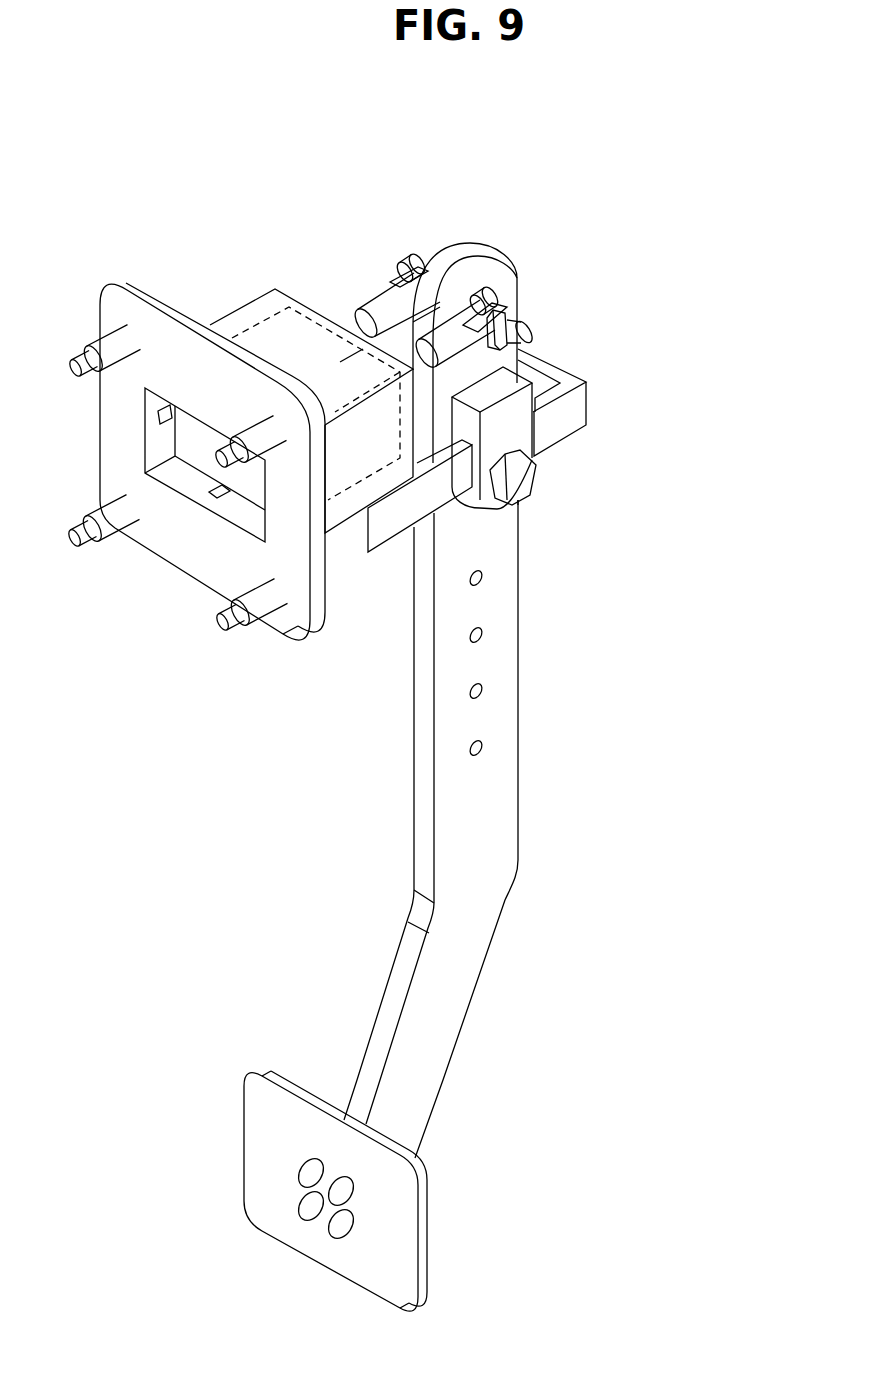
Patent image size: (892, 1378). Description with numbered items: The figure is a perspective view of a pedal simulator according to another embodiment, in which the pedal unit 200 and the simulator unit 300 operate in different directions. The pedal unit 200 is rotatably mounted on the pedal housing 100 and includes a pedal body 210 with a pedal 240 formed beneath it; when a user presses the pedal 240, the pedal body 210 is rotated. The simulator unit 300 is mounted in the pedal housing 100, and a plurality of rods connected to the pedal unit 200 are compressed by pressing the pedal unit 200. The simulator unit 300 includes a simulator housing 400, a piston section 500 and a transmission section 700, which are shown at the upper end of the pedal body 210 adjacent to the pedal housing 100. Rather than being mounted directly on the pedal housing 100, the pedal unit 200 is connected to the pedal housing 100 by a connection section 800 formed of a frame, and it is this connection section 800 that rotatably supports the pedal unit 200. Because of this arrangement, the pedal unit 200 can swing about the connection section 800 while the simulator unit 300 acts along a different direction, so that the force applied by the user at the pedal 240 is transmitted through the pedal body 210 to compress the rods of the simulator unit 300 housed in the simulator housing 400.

The pedal housing 100 is at (207, 320).
The pedal unit 200 is at (553, 1140).
The pedal body 210 is at (460, 968).
The pedal 240 is at (388, 1215).
The simulator unit 300 is at (320, 185).
The simulator housing 400 is at (262, 322).
The piston section 500 is at (453, 350).
The transmission section 700 is at (528, 322).
The connection section 800 is at (557, 418).